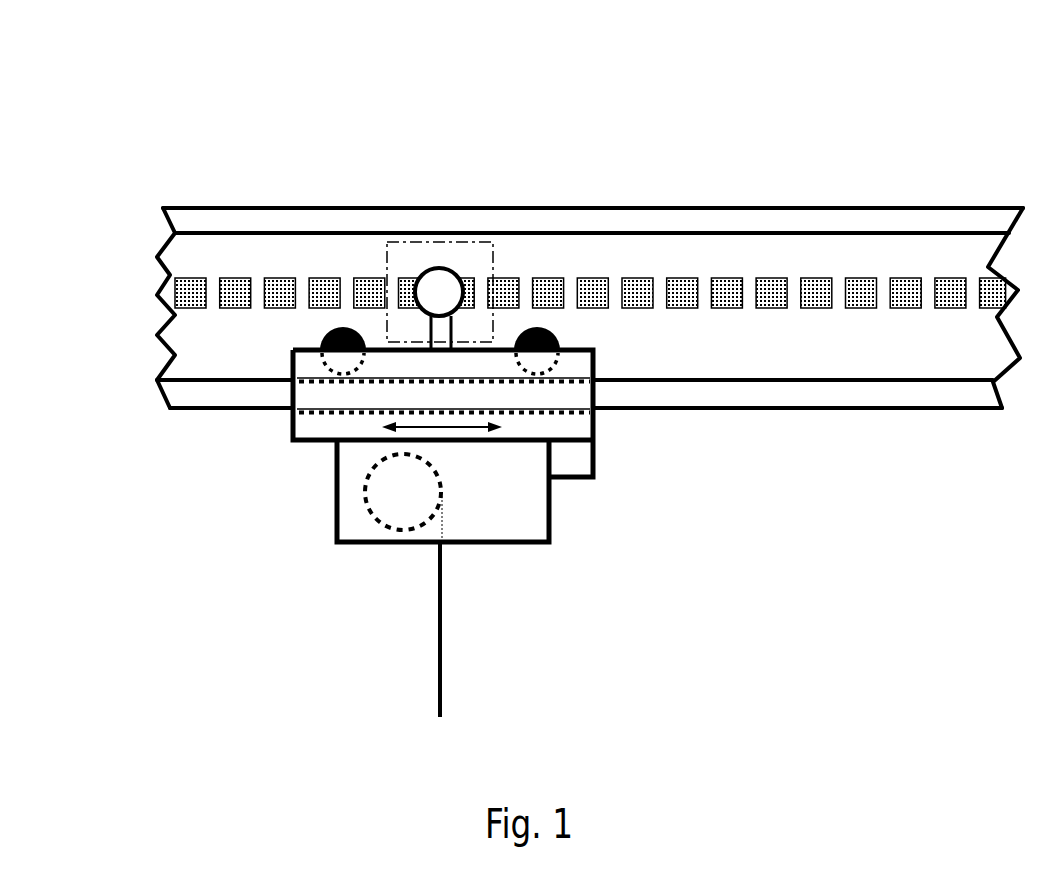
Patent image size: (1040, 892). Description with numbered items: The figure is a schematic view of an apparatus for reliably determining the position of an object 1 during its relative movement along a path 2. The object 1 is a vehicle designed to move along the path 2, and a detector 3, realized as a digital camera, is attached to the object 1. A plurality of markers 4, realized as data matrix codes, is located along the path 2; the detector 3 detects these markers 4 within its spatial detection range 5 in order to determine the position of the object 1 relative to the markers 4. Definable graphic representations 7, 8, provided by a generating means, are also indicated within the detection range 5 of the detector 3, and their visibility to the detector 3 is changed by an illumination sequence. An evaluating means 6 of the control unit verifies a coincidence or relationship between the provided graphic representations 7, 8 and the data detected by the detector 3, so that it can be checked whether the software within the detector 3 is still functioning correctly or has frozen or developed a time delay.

The object 1 is at (595, 428).
The path 2 is at (763, 208).
The detector 3 is at (447, 268).
The markers 4 is at (505, 280).
The spatial detection range 5 is at (413, 243).
The evaluating means 6 is at (563, 477).
The graphic representation 7 is at (398, 278).
The graphic representation 8 is at (477, 277).